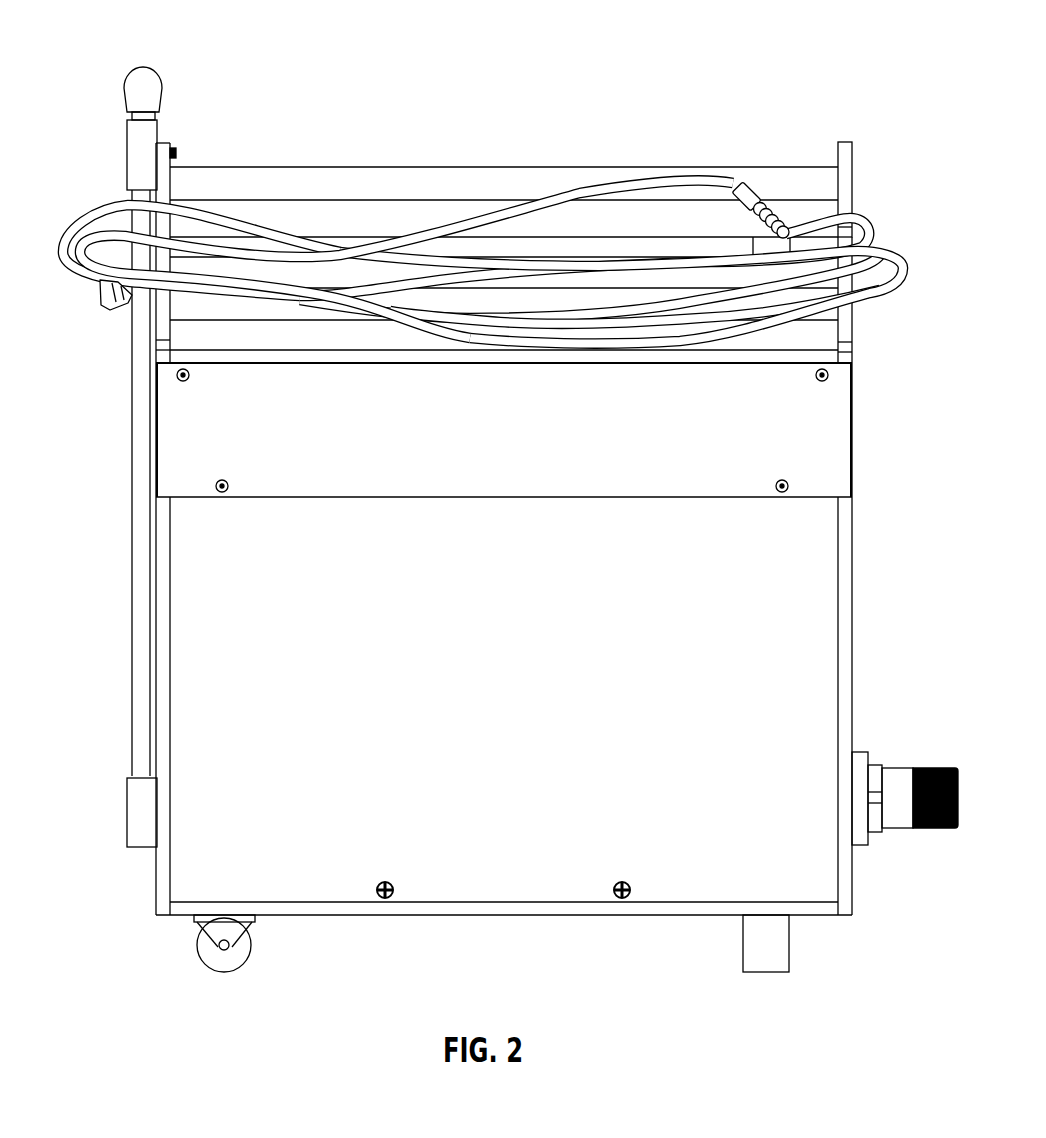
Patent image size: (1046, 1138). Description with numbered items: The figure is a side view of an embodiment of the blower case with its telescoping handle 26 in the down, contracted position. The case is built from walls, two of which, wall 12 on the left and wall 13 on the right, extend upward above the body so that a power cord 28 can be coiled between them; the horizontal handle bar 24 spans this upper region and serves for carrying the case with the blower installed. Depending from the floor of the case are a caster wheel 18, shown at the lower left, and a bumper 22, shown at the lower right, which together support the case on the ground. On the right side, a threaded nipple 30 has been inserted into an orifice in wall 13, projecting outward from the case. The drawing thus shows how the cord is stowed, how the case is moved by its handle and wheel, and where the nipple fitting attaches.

The wall 12 is at (178, 153).
The wall 13 is at (853, 190).
The caster wheel 18 is at (225, 968).
The bumper 22 is at (765, 972).
The horizontal handle bar 24 is at (335, 166).
The telescoping handle 26 is at (130, 83).
The power cord 28 is at (905, 276).
The threaded nipple 30 is at (910, 765).